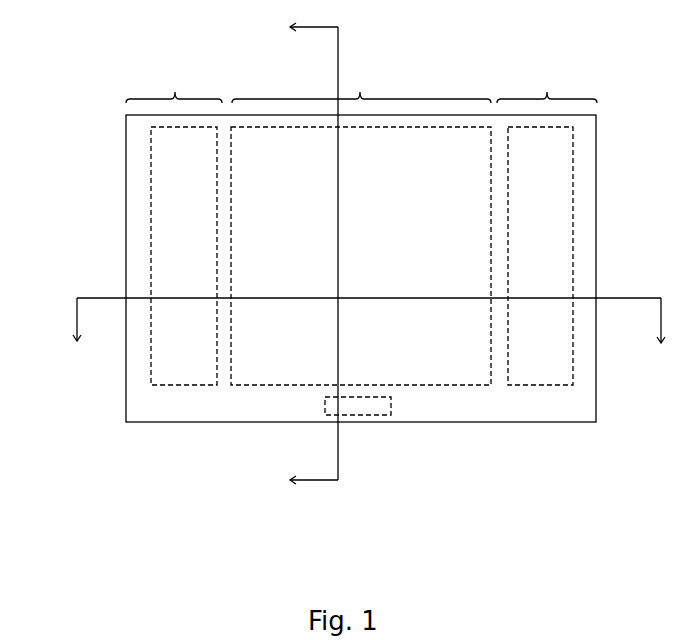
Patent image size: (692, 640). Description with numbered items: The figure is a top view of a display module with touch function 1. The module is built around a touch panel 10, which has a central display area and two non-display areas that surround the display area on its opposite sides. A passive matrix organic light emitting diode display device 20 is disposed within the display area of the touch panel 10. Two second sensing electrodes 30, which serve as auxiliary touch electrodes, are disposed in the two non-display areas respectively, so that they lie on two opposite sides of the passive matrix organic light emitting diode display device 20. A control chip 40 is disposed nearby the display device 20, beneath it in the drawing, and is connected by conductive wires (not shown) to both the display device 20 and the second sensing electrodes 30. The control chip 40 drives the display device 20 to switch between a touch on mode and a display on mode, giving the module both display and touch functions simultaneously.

The display module with touch function 1 is at (94, 58).
The touch panel 10 is at (140, 157).
The passive matrix organic light emitting diode display device 20 is at (476, 172).
The second sensing electrode 30 is at (165, 188).
The control chip 40 is at (385, 412).